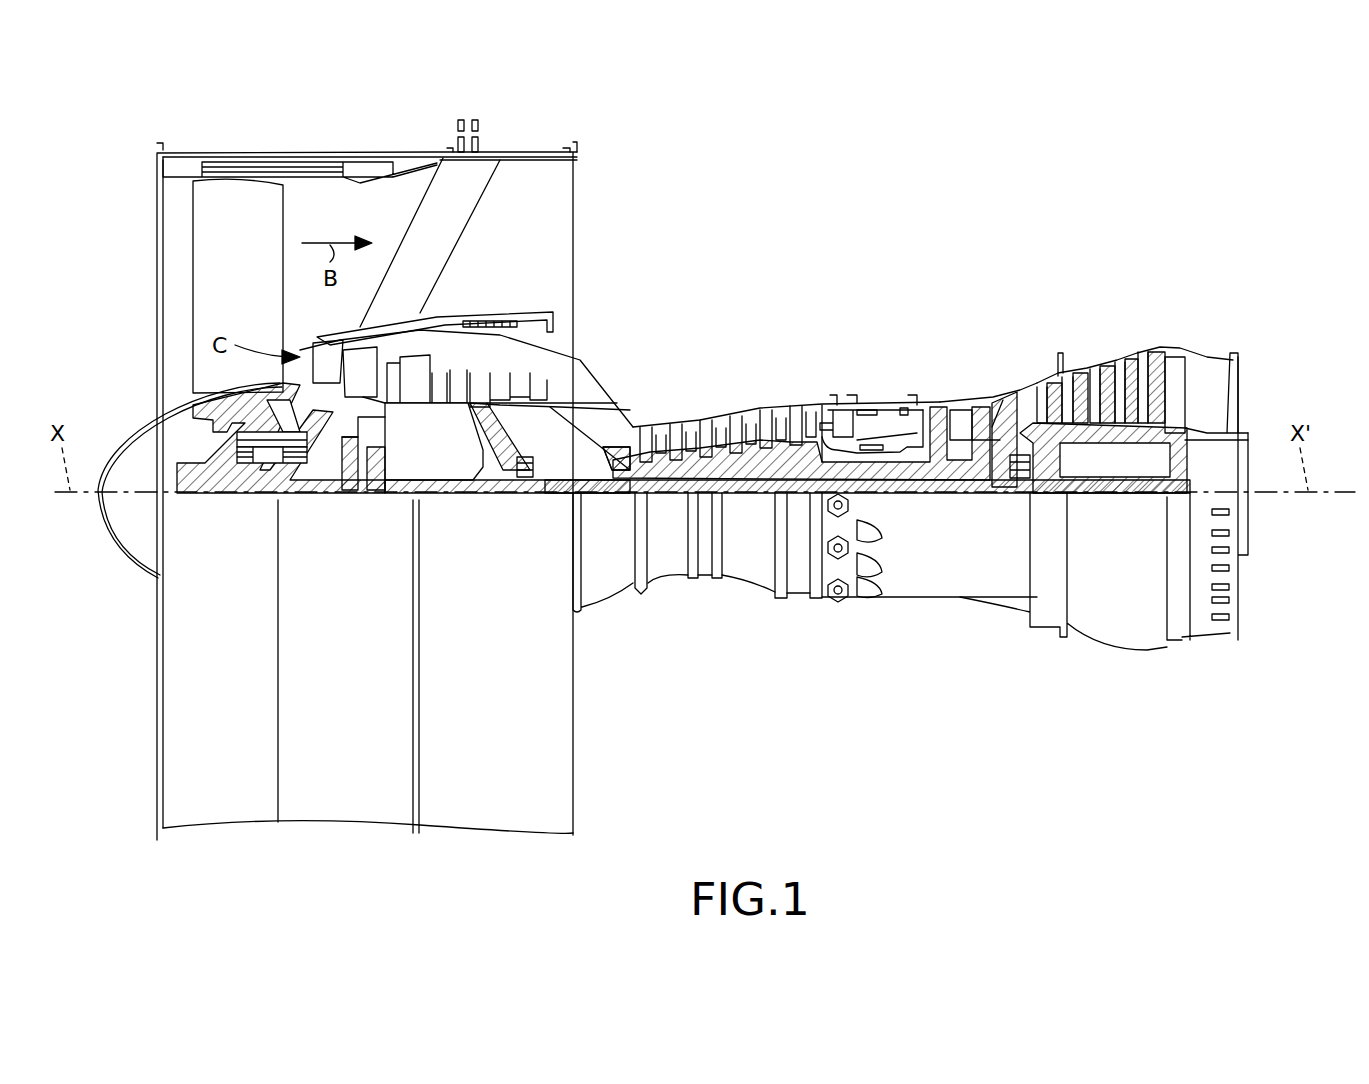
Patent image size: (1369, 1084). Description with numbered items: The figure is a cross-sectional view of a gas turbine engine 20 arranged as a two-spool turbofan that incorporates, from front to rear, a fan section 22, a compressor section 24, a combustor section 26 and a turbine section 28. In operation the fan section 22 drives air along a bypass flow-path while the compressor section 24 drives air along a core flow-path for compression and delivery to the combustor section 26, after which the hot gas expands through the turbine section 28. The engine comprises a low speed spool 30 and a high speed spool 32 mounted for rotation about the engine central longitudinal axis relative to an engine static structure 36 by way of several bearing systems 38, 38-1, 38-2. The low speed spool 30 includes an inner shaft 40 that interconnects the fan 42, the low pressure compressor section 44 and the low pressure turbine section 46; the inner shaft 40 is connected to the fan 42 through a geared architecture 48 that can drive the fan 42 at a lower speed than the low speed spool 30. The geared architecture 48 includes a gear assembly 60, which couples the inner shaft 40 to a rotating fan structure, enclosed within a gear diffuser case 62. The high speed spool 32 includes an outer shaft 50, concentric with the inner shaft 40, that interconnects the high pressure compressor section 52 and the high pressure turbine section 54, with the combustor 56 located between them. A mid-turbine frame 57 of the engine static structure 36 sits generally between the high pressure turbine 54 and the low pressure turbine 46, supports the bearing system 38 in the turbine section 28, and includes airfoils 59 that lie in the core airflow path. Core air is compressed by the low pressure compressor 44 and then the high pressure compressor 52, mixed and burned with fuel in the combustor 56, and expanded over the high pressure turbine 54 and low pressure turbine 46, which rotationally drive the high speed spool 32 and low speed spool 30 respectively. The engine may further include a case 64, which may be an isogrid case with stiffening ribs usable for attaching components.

The gas turbine engine 20 is at (945, 198).
The fan section 22 is at (415, 130).
The compressor section 24 is at (835, 275).
The combustor section 26 is at (938, 275).
The turbine section 28 is at (1175, 275).
The low speed spool 30 is at (758, 517).
The high speed spool 32 is at (797, 452).
The engine static structure 36 is at (147, 828).
The bearing system 38 is at (1008, 494).
The bearing system 38-1 is at (250, 465).
The bearing system 38-2 is at (522, 480).
The inner shaft 40 is at (597, 495).
The fan 42 is at (238, 286).
The low pressure compressor section 44 is at (500, 382).
The low pressure turbine section 46 is at (1103, 370).
The geared architecture 48 is at (378, 510).
The outer shaft 50 is at (875, 478).
The high pressure compressor section 52 is at (752, 420).
The high pressure turbine section 54 is at (960, 400).
The combustor 56 is at (892, 425).
The mid-turbine frame 57 is at (1010, 413).
The airfoils 59 is at (1028, 420).
The gear assembly 60 is at (380, 468).
The gear diffuser case 62 is at (385, 430).
The case 64 is at (1200, 640).